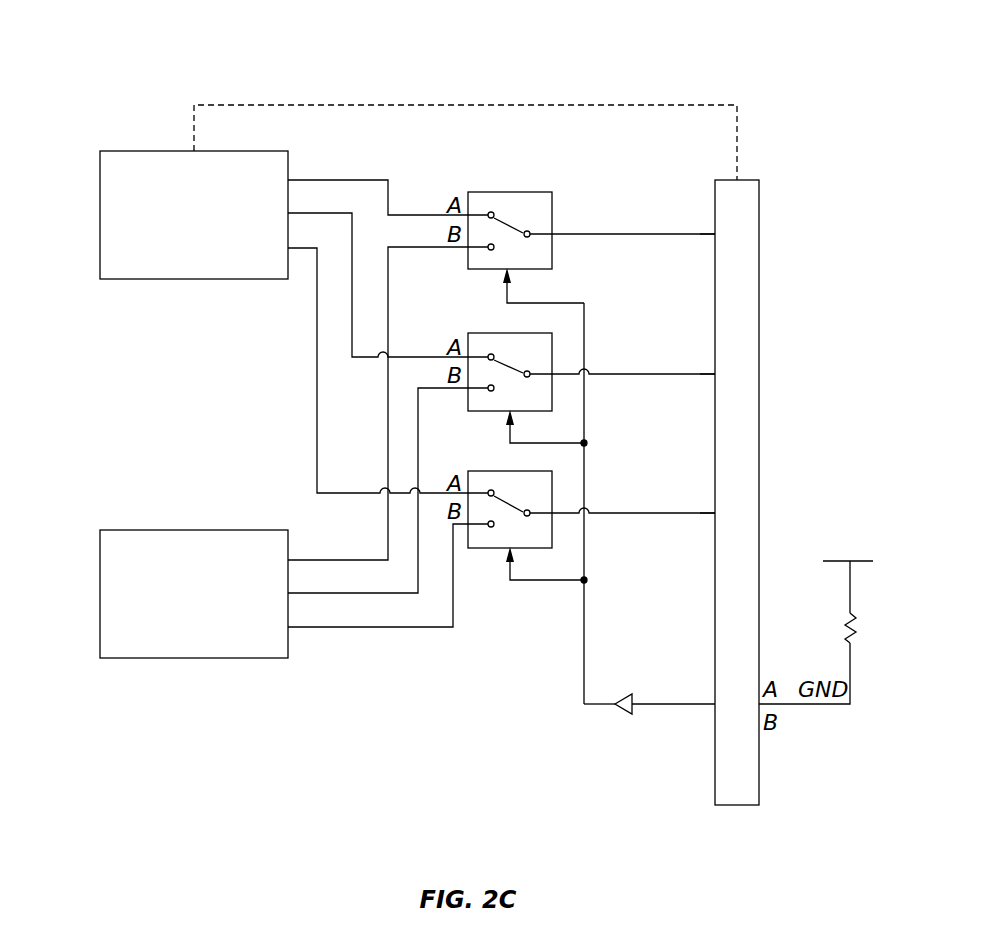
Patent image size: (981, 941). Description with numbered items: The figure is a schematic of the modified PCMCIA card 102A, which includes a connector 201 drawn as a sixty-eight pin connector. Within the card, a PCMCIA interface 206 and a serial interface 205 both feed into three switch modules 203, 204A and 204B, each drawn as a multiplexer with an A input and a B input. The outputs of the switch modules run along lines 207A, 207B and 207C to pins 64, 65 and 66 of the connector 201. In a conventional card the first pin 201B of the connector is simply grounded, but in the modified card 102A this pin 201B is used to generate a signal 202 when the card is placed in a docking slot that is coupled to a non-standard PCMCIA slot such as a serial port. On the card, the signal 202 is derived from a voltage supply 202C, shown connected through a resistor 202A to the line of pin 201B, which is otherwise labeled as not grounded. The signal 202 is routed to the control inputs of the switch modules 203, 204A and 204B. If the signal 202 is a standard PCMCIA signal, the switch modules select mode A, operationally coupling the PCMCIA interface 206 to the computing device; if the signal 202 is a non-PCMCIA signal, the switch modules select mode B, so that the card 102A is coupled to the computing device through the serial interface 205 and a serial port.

The modified PCMCIA card 102A is at (144, 58).
The PCMCIA interface 206 is at (140, 151).
The serial interface 205 is at (140, 530).
The switch module 203 is at (512, 192).
The switch module 204A is at (490, 333).
The switch module 204B is at (496, 471).
The multiplexer output line to pin 64 207A is at (600, 235).
The multiplexer output line to pin 65 207B is at (600, 375).
The multiplexer output line to pin 66 207C is at (600, 513).
The connector pin 64 is at (698, 223).
The connector pin 65 is at (698, 363).
The connector pin 66 is at (698, 501).
The connector 201 is at (745, 806).
The pin 1 201B is at (636, 704).
The signal 202 is at (630, 714).
The pull-up resistor 202A is at (846, 625).
The voltage supply 202C is at (835, 561).